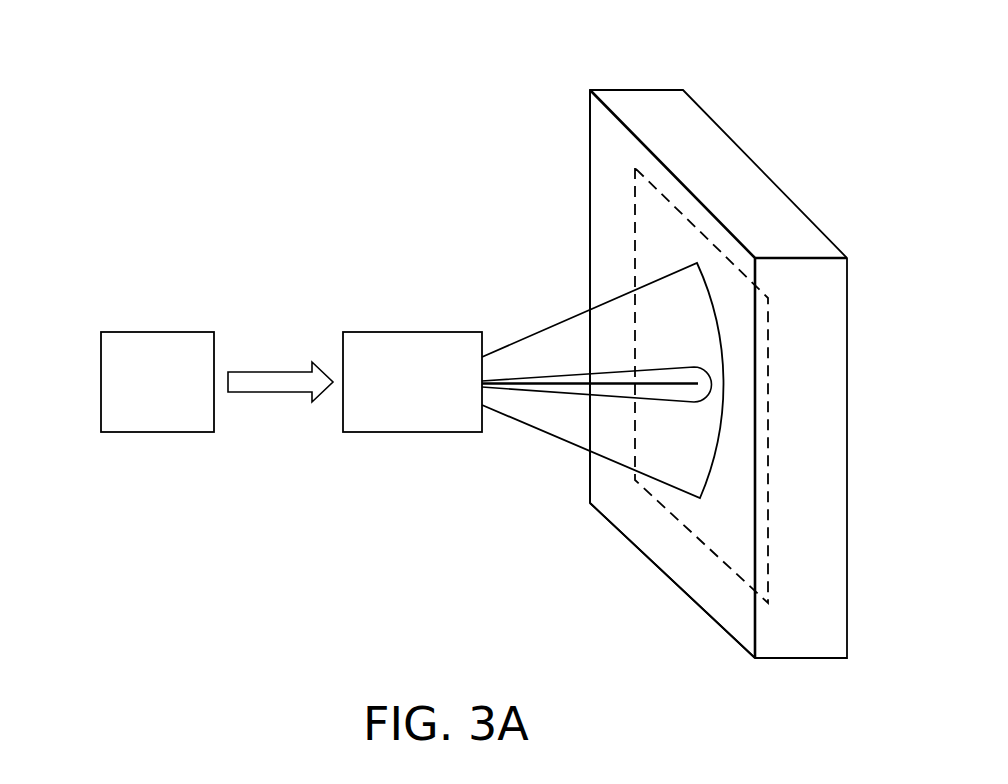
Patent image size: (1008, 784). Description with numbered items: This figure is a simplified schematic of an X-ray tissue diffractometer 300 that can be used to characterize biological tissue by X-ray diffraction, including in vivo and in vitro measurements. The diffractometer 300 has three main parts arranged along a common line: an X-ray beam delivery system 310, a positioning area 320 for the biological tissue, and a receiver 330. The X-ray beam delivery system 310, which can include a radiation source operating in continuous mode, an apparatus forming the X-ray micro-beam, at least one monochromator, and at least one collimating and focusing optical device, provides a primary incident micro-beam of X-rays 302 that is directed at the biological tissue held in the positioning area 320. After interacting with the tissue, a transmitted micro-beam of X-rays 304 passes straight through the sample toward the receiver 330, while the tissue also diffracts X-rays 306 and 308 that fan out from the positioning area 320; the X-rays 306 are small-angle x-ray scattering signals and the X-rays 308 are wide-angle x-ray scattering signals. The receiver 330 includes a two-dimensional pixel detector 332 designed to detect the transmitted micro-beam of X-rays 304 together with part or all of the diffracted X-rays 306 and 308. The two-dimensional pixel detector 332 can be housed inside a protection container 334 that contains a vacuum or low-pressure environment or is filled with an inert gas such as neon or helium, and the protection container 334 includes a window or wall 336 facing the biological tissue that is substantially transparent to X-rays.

The X-ray tissue diffractometer 300 is at (181, 232).
The primary incident micro-beam of X-rays 302 is at (278, 393).
The transmitted micro-beam of X-rays 304 is at (560, 377).
The small-angle x-ray scattering signals 306 is at (580, 373).
The wide-angle x-ray scattering signals 308 is at (543, 432).
The X-ray beam delivery system 310 is at (128, 400).
The positioning area 320 is at (441, 400).
The receiver 330 is at (673, 329).
The two-dimensional pixel detector 332 is at (705, 555).
The protection container 334 is at (612, 528).
The window or wall 336 is at (607, 200).